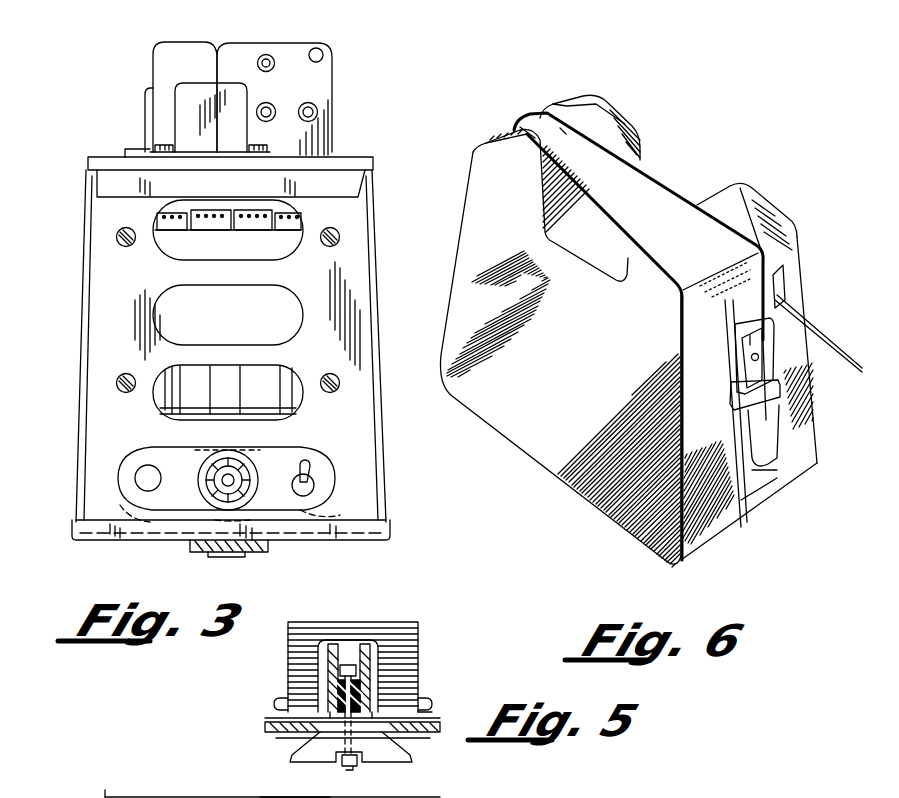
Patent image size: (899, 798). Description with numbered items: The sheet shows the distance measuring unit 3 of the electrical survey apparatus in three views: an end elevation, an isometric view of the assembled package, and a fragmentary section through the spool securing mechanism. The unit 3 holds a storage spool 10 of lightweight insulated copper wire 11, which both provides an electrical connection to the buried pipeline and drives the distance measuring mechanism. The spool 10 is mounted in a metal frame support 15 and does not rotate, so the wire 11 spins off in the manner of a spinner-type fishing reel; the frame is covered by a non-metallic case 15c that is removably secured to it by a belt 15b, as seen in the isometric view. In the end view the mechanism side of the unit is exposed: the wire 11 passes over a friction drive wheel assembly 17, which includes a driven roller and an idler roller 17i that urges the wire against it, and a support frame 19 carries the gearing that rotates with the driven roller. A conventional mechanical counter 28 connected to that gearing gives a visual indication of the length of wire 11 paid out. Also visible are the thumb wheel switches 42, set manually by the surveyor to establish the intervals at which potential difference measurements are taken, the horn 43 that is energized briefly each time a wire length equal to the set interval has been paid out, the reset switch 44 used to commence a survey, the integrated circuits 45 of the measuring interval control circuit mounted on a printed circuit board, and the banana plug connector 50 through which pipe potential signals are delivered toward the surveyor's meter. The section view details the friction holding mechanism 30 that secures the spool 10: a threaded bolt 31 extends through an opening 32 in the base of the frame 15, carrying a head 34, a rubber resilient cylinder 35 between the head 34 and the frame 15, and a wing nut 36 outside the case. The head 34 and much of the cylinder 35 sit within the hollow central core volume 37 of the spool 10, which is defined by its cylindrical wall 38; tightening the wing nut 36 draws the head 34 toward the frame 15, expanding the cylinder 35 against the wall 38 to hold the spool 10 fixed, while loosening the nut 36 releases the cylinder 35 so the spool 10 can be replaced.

In FIG. 3, the distance measuring unit 3 is at (112, 73).
In FIG. 6, the storage spool 10 is at (755, 364).
In FIG. 5, the storage spool 10 is at (424, 692).
In FIG. 6, the wire 11 is at (805, 315).
In FIG. 5, the wire 11 is at (410, 632).
In FIG. 3, the metal frame support 15 is at (384, 448).
In FIG. 6, the metal frame support 15 is at (628, 331).
In FIG. 5, the metal frame support 15 is at (436, 720).
In FIG. 3, the belt 15b is at (255, 548).
In FIG. 6, the belt 15b is at (662, 198).
In FIG. 5, the belt 15b is at (428, 734).
In FIG. 6, the non-metallic case 15c is at (738, 210).
In FIG. 5, the friction drive wheel assembly 17 is at (225, 797).
In FIG. 5, the idler roller 17i is at (290, 797).
In FIG. 3, the support frame 19 is at (322, 72).
In FIG. 3, the mechanical counter 28 is at (175, 107).
In FIG. 5, the friction holding mechanism 30 is at (262, 733).
In FIG. 5, the threaded bolt 31 is at (330, 690).
In FIG. 5, the opening 32 is at (354, 770).
In FIG. 5, the head 34 is at (338, 652).
In FIG. 5, the resilient cylinder 35 is at (325, 707).
In FIG. 5, the wing nut 36 is at (292, 755).
In FIG. 5, the hollow central core volume 37 is at (357, 652).
In FIG. 5, the cylindrical wall 38 is at (365, 650).
In FIG. 3, the thumb wheel switches 42 is at (153, 400).
In FIG. 3, the horn 43 is at (236, 455).
In FIG. 3, the reset switch 44 is at (310, 462).
In FIG. 3, the integrated circuits 45 is at (190, 241).
In FIG. 3, the banana plug connector 50 is at (118, 472).